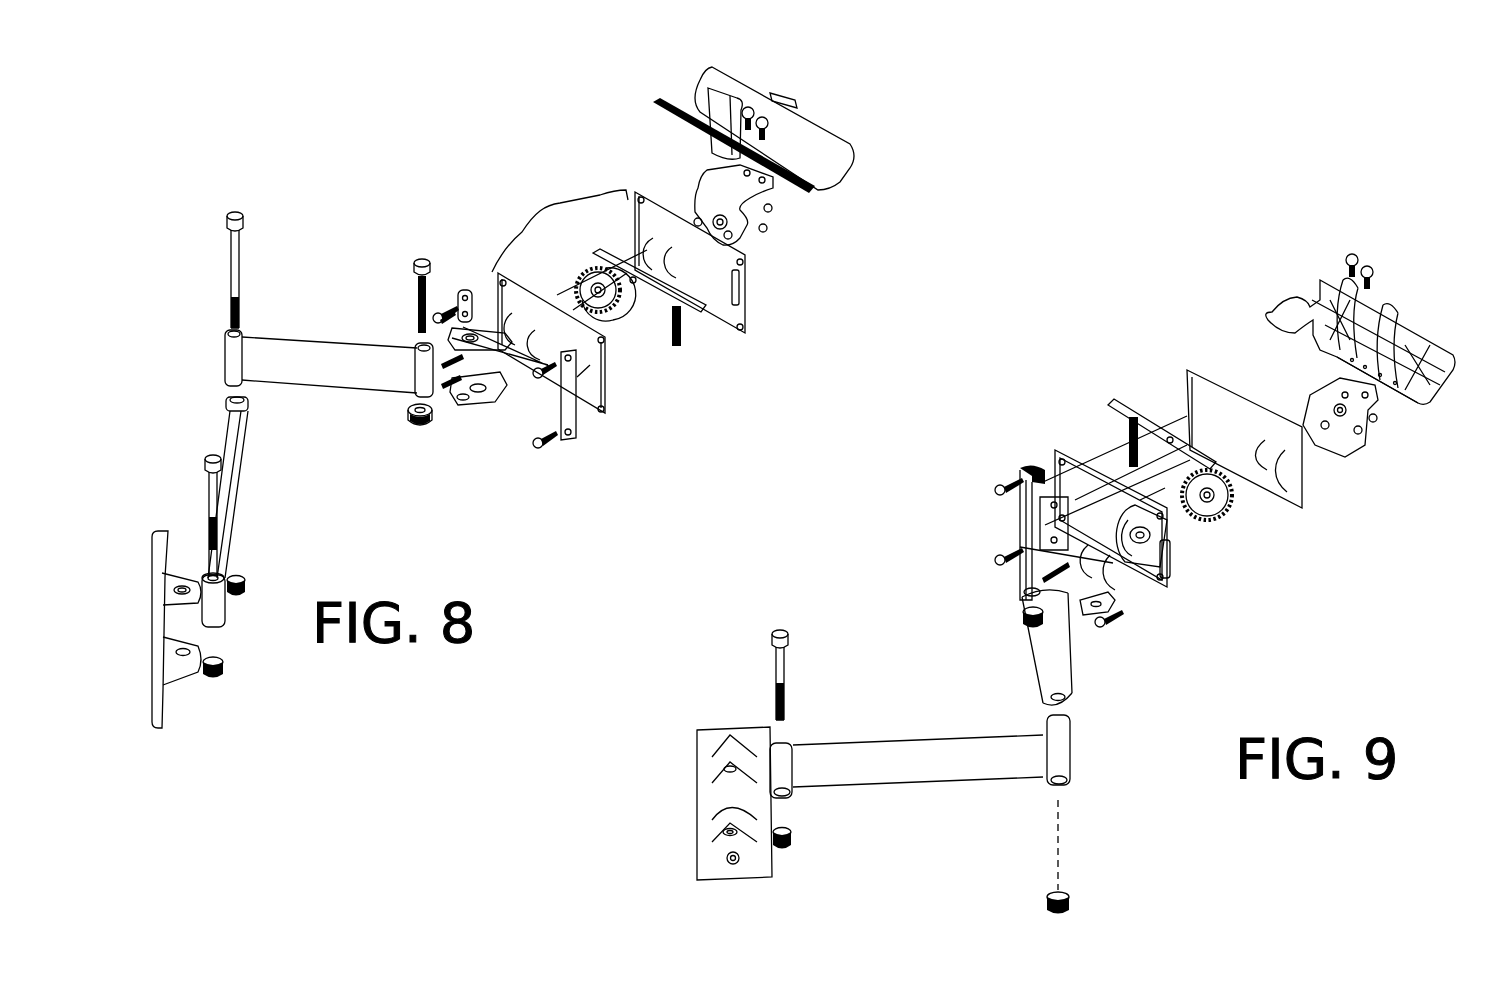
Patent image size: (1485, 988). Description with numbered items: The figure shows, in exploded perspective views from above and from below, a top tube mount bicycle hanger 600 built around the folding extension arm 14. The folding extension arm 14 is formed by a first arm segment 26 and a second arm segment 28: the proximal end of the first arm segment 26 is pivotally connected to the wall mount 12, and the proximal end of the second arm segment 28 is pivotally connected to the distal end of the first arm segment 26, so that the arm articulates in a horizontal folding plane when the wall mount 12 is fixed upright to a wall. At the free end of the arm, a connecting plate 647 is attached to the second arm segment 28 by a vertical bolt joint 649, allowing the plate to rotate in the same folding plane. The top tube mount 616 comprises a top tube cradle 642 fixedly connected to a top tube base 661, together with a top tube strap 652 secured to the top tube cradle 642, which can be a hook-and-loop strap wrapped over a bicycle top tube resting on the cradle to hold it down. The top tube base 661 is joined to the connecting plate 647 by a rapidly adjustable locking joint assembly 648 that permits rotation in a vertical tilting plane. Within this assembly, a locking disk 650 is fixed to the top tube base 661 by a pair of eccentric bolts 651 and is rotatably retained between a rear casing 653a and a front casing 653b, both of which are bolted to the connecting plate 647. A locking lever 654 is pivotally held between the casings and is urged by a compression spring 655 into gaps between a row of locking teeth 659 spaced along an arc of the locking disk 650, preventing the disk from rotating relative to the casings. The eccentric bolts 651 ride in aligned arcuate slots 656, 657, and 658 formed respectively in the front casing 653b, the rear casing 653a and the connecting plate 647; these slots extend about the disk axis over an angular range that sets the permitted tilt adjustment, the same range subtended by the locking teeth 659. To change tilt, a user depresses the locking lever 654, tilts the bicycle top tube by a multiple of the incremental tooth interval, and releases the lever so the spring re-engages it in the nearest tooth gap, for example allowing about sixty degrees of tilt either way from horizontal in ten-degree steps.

In FIG. 8, the top tube mount bicycle hanger 600 is at (346, 166).
In FIG. 9, the top tube mount bicycle hanger 600 is at (916, 538).
In FIG. 8, the folding extension arm 14 is at (178, 378).
In FIG. 9, the folding extension arm 14 is at (1092, 708).
In FIG. 8, the wall mount 12 is at (152, 730).
In FIG. 9, the wall mount 12 is at (702, 849).
In FIG. 8, the second arm segment 28 is at (346, 377).
In FIG. 9, the second arm segment 28 is at (1040, 642).
In FIG. 8, the first arm segment 26 is at (242, 491).
In FIG. 9, the first arm segment 26 is at (941, 772).
In FIG. 8, the vertical bolt joint 649 is at (422, 434).
In FIG. 9, the vertical bolt joint 649 is at (1021, 468).
In FIG. 8, the locking joint assembly 648 is at (560, 223).
In FIG. 8, the arcuate slot 657 is at (510, 315).
In FIG. 9, the arcuate slot 657 is at (1170, 560).
In FIG. 8, the arcuate slot 656 is at (640, 248).
In FIG. 9, the arcuate slot 656 is at (1287, 505).
In FIG. 8, the locking teeth 659 is at (596, 265).
In FIG. 9, the locking teeth 659 is at (1200, 478).
In FIG. 8, the rear casing 653a is at (590, 408).
In FIG. 9, the rear casing 653a is at (1165, 583).
In FIG. 8, the front casing 653b is at (748, 302).
In FIG. 9, the front casing 653b is at (1236, 446).
In FIG. 8, the locking lever 654 is at (712, 318).
In FIG. 9, the locking lever 654 is at (1157, 425).
In FIG. 8, the compression spring 655 is at (680, 346).
In FIG. 9, the compression spring 655 is at (1133, 425).
In FIG. 8, the locking disk 650 is at (612, 322).
In FIG. 9, the locking disk 650 is at (1222, 517).
In FIG. 8, the connecting plate 647 is at (522, 445).
In FIG. 9, the connecting plate 647 is at (1118, 580).
In FIG. 8, the arcuate slot 658 is at (498, 372).
In FIG. 9, the arcuate slot 658 is at (1060, 578).
In FIG. 8, the eccentric bolts 651 is at (463, 398).
In FIG. 8, the top tube strap 652 is at (705, 95).
In FIG. 9, the top tube strap 652 is at (1380, 300).
In FIG. 8, the top tube base 661 is at (712, 188).
In FIG. 9, the top tube base 661 is at (1337, 457).
In FIG. 8, the top tube cradle 642 is at (850, 133).
In FIG. 9, the top tube cradle 642 is at (1428, 328).
In FIG. 8, the top tube mount 616 is at (813, 218).
In FIG. 9, the top tube mount 616 is at (1463, 392).